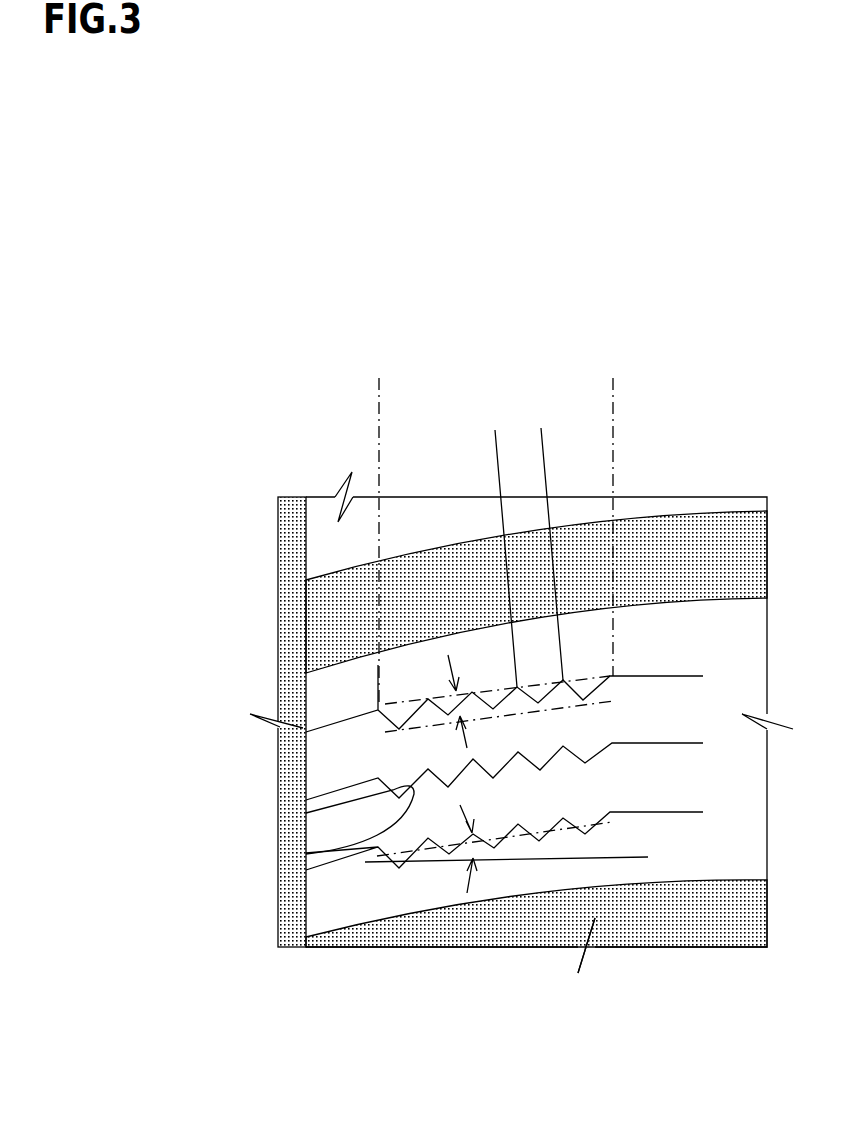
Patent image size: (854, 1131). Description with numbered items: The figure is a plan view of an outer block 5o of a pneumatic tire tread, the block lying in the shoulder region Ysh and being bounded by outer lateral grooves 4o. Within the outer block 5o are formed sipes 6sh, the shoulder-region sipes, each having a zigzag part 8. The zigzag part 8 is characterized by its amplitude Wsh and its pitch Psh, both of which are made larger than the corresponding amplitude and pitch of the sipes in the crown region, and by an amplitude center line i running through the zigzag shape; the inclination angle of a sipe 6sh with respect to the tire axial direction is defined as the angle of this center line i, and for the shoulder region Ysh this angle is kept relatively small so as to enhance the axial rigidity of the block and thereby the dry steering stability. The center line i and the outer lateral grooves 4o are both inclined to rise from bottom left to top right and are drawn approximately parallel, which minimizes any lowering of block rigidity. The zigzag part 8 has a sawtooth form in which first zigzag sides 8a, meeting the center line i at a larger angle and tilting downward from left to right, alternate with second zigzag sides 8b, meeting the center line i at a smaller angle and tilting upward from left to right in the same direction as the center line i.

The outer lateral groove 4o is at (330, 616).
The outer block 5o is at (407, 897).
The sipe in the shoulder region 6sh is at (345, 720).
The zigzag part 8 is at (617, 382).
The first zigzag side 8a is at (280, 812).
The second zigzag side 8b is at (280, 855).
The amplitude center line i is at (612, 825).
The shoulder region Ysh is at (305, 419).
The amplitude of the zigzag part of the shoulder sipe Wsh is at (455, 705).
The pitch of the zigzag part of the shoulder sipe Psh is at (556, 435).